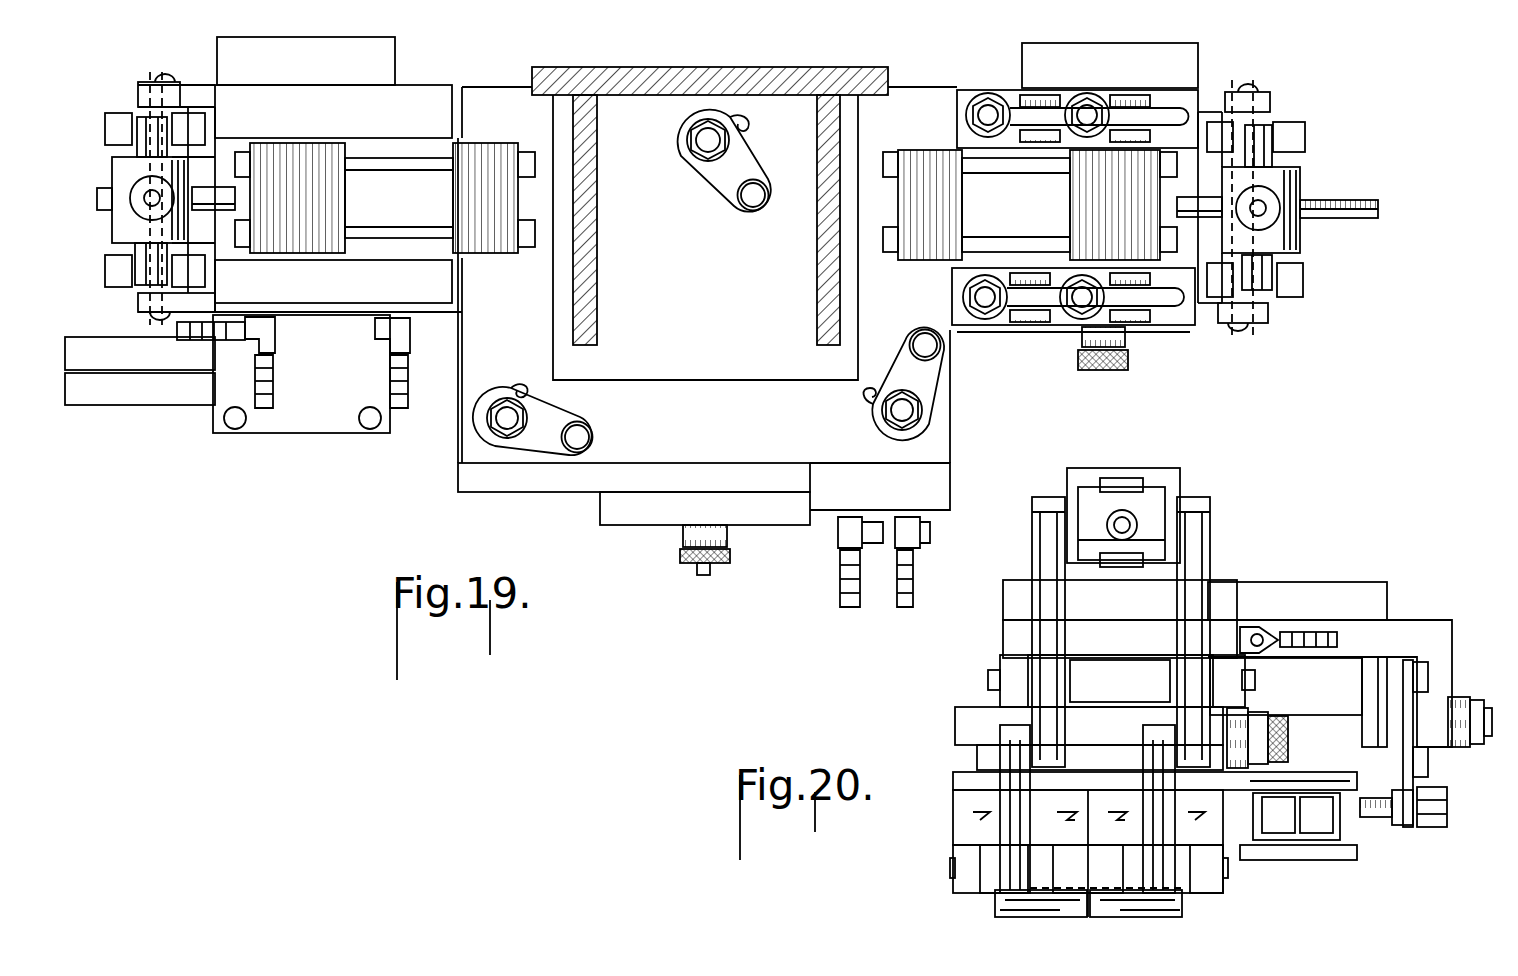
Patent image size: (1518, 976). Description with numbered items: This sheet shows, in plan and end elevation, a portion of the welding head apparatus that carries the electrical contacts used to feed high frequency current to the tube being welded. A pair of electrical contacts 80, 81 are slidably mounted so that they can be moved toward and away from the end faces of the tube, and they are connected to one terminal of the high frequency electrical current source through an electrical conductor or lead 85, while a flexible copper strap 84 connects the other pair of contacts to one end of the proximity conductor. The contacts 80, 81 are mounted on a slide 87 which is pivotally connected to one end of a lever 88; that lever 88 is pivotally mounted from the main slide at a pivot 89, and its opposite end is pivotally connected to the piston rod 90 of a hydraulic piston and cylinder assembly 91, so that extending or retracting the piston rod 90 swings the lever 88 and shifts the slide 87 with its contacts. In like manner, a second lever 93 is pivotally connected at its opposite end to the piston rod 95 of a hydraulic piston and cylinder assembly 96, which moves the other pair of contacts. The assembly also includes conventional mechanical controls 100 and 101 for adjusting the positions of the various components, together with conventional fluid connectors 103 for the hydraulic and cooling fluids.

In FIG. 20, the electrical contact 80 is at (995, 906).
In FIG. 20, the electrical contact 81 is at (1183, 910).
In FIG. 19, the flexible copper strap 84 is at (100, 405).
In FIG. 19, the electrical conductor or lead 85 is at (90, 340).
In FIG. 20, the slide 87 is at (960, 851).
In FIG. 19, the lever 88 is at (112, 125).
In FIG. 20, the lever 88 is at (1034, 536).
In FIG. 20, the pivot mounting of lever 88 89 is at (988, 678).
In FIG. 19, the piston rod 90 is at (223, 193).
In FIG. 19, the hydraulic piston and cylinder assembly 91 is at (410, 208).
In FIG. 19, the lever 93 is at (1303, 280).
In FIG. 19, the piston rod 95 is at (1225, 210).
In FIG. 19, the hydraulic piston and cylinder assembly 96 is at (1030, 214).
In FIG. 19, the control 100 is at (682, 562).
In FIG. 20, the control 100 is at (1452, 748).
In FIG. 19, the control 101 is at (1128, 345).
In FIG. 20, the control 101 is at (1262, 720).
In FIG. 19, the fluid connector 103 is at (390, 385).